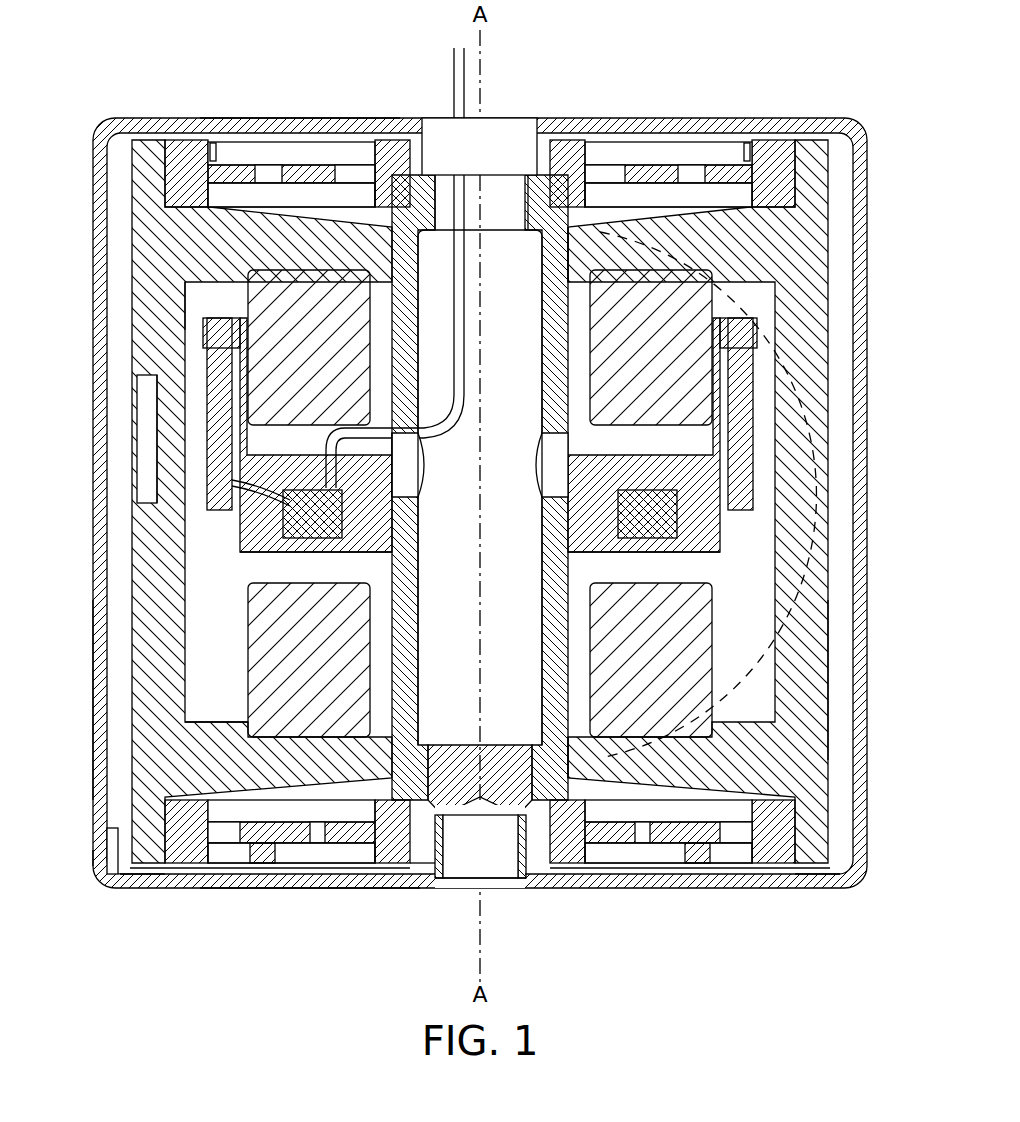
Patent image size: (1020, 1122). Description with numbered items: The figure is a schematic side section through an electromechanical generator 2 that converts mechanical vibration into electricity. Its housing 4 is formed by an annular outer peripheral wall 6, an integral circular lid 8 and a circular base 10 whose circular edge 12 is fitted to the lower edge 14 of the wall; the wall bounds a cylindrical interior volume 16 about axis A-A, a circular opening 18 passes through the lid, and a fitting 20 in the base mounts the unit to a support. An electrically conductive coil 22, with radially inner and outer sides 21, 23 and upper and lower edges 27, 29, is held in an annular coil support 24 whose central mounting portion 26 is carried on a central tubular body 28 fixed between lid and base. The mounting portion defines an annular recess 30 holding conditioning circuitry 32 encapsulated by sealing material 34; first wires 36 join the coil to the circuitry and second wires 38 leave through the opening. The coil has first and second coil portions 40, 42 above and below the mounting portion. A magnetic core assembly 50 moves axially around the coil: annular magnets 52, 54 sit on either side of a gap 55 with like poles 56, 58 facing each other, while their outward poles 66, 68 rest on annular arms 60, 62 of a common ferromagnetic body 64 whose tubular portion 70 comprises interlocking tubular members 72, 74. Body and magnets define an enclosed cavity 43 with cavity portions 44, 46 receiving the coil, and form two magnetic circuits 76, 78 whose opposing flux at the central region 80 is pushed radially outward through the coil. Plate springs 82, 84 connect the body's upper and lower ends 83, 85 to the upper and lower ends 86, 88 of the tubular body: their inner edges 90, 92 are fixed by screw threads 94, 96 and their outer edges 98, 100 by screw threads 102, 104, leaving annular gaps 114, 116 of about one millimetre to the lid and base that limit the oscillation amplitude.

The electromechanical generator 2 is at (228, 920).
The housing 4 is at (96, 770).
The annular outer peripheral wall 6 is at (97, 700).
The circular lid 8 is at (285, 125).
The circular base 10 is at (320, 883).
The circular edge 12 is at (115, 833).
The lower edge 14 is at (95, 858).
The cylindrical cross-section interior volume 16 is at (120, 668).
The circular opening 18 is at (428, 128).
The fitting 20 is at (520, 870).
The radially inner side 21 is at (440, 350).
The electrically conductive coil 22 is at (205, 432).
The radially outer side 23 is at (205, 380).
The annular coil support 24 is at (195, 330).
The annular central mounting portion 26 is at (250, 578).
The upper edge 27 is at (190, 298).
The central tubular body 28 is at (430, 295).
The lower edge 29 is at (220, 680).
The annular recess 30 is at (250, 522).
The circuitry 32 is at (340, 515).
The sealing material 34 is at (300, 480).
The first wires 36 is at (235, 478).
The second wires 38 is at (452, 70).
The first coil portion 40 is at (750, 410).
The second coil portion 42 is at (760, 600).
The annular enclosed cavity 43 is at (770, 470).
The cavity portion 44 is at (805, 295).
The cavity portion 46 is at (800, 680).
The magnetic core assembly 50 is at (810, 235).
The annular magnet 52 is at (600, 322).
The annular magnet 54 is at (600, 655).
The gap 55 is at (360, 568).
The pole 56 is at (725, 450).
The pole 58 is at (730, 560).
The annular arm 60 is at (560, 262).
The annular arm 62 is at (600, 745).
The common ferromagnetic body 64 is at (800, 700).
The pole 66 is at (800, 268).
The pole 68 is at (800, 815).
The tubular portion 70 is at (790, 545).
The tubular member 72 is at (820, 335).
The tubular member 74 is at (820, 630).
The magnetic circuit 76 is at (840, 215).
The magnetic circuit 78 is at (780, 790).
The central region 80 is at (800, 530).
The plate spring 82 is at (765, 150).
The upper end 83 is at (800, 148).
The plate spring 84 is at (778, 865).
The lower end 85 is at (800, 870).
The upper end 86 is at (548, 160).
The lower end 88 is at (428, 870).
The radially inner annular edge 90 is at (385, 172).
The radially inner annular edge 92 is at (385, 870).
The screw thread 94 is at (572, 172).
The screw thread 96 is at (575, 870).
The radially outer annular edge 98 is at (170, 160).
The radially outer annular edge 100 is at (195, 865).
The screw thread 102 is at (145, 150).
The screw thread 104 is at (165, 870).
The annular gap 114 is at (695, 140).
The annular gap 116 is at (725, 865).